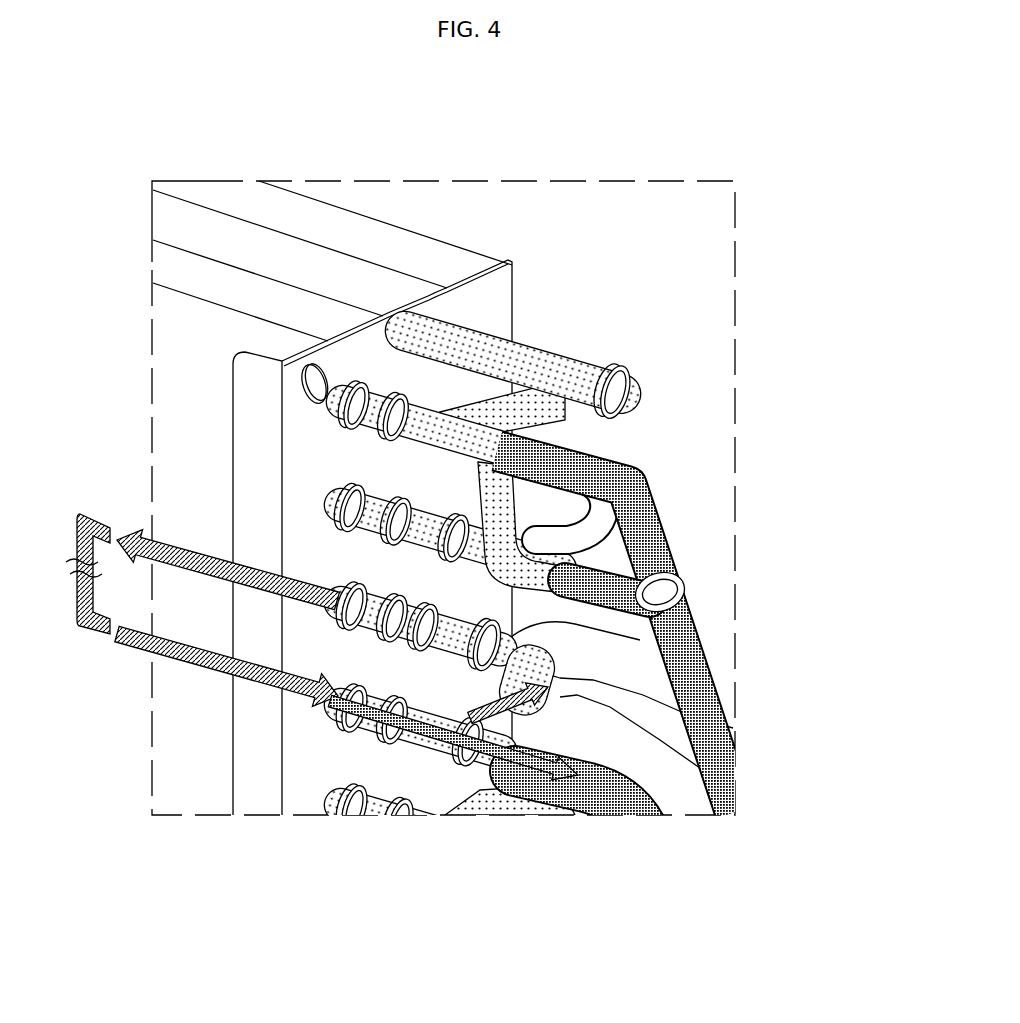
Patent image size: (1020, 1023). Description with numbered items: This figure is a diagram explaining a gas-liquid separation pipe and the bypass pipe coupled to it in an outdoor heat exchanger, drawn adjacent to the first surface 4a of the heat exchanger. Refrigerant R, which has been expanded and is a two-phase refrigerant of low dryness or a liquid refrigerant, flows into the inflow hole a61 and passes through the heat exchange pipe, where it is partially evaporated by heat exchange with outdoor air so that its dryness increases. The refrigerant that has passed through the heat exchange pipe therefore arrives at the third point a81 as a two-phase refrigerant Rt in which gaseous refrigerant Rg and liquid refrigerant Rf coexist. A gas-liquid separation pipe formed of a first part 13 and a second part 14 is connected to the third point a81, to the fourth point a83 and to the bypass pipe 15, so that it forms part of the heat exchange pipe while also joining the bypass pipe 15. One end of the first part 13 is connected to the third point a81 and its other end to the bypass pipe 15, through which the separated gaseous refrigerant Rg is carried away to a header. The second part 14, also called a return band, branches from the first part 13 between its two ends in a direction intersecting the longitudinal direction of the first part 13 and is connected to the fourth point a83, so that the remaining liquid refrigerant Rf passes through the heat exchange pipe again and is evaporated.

The first surface 4a is at (487, 300).
The inflow hole a61 is at (375, 612).
The third point a81 is at (360, 782).
The fourth point a83 is at (510, 633).
The first part 13 is at (462, 780).
The second part 14 is at (717, 780).
The bypass pipe 15 is at (630, 803).
The refrigerant R is at (178, 548).
The liquid refrigerant Rf is at (175, 657).
The gaseous refrigerant Rg is at (220, 673).
The two-phase refrigerant Rt is at (140, 790).